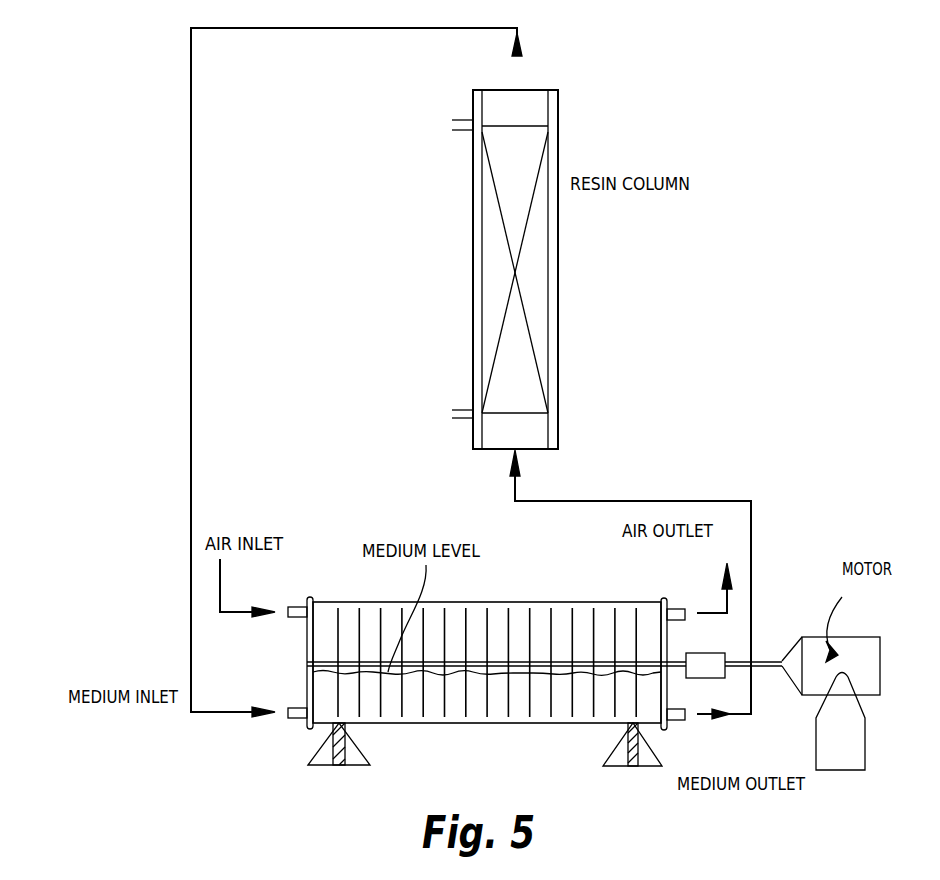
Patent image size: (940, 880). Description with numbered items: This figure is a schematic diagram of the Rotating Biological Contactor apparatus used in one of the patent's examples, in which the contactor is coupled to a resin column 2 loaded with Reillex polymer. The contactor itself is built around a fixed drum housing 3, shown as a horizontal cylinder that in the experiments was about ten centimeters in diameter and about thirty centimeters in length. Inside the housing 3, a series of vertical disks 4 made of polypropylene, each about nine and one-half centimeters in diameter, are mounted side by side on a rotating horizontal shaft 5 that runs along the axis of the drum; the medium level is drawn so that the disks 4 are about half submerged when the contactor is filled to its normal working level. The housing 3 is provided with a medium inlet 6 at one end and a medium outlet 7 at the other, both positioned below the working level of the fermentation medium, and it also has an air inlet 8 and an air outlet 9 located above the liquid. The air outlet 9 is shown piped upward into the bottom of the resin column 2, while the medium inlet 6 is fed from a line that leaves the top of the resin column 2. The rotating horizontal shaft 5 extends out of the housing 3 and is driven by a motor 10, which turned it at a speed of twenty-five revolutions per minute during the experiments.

The resin column 2 is at (558, 283).
The fixed drum housing 3 is at (523, 723).
The vertical disks 4 is at (487, 628).
The rotating horizontal shaft 5 is at (606, 666).
The medium inlet 6 is at (205, 712).
The medium outlet 7 is at (706, 718).
The air inlet 8 is at (220, 595).
The air outlet 9 is at (722, 597).
The motor 10 is at (880, 660).